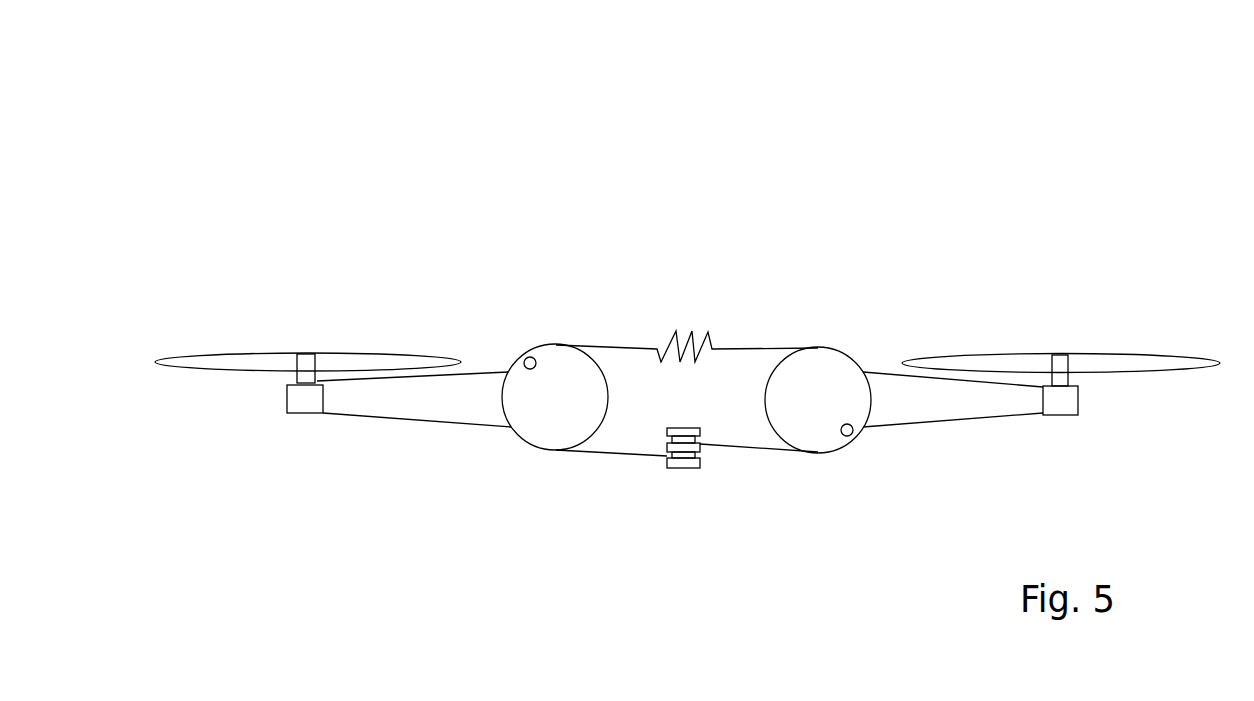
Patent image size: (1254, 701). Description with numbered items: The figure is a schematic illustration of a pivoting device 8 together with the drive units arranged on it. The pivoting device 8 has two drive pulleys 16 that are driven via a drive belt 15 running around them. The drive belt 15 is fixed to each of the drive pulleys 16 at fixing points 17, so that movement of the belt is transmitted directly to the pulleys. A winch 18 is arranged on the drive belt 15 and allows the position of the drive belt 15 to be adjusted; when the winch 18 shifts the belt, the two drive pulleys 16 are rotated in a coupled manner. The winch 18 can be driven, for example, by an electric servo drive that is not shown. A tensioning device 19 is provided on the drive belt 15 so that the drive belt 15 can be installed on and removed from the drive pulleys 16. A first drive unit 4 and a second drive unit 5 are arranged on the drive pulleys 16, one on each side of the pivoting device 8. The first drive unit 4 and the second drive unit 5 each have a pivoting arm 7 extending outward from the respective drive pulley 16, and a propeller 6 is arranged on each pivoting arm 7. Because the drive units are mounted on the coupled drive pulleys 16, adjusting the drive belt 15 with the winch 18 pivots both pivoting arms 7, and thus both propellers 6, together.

The first drive unit 4 is at (342, 313).
The second drive unit 5 is at (987, 340).
The propeller 6 is at (227, 362).
The pivoting arm 7 is at (428, 398).
The pivoting device 8 is at (768, 223).
The drive belt 15 is at (623, 455).
The drive pulley 16 is at (567, 375).
The fixing point 17 is at (526, 357).
The winch 18 is at (687, 468).
The tensioning device 19 is at (683, 332).